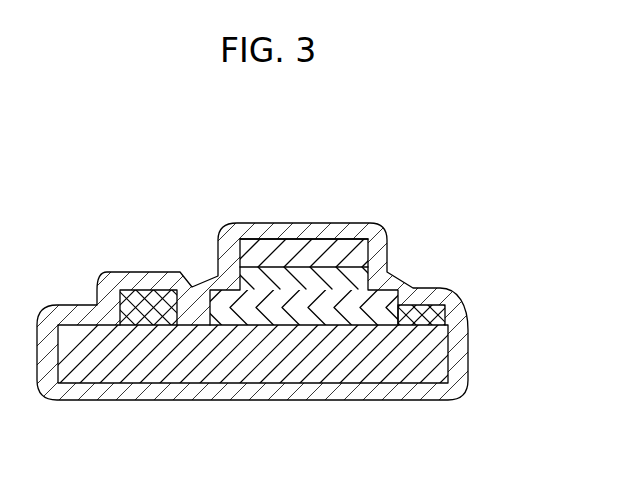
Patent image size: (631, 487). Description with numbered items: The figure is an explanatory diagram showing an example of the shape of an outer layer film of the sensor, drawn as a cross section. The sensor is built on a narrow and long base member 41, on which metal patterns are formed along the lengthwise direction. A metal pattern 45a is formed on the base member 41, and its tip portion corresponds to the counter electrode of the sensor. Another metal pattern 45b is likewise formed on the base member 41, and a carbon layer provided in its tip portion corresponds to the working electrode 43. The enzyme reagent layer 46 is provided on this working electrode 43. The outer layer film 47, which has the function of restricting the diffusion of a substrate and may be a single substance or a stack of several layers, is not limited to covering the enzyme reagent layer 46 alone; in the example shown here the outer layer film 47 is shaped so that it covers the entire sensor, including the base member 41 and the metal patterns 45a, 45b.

The base member 41 is at (469, 351).
The working electrode 43 is at (257, 243).
The metal pattern 45a is at (155, 298).
The metal pattern 45b is at (418, 290).
The enzyme reagent layer 46 is at (305, 238).
The outer layer film 47 is at (369, 221).